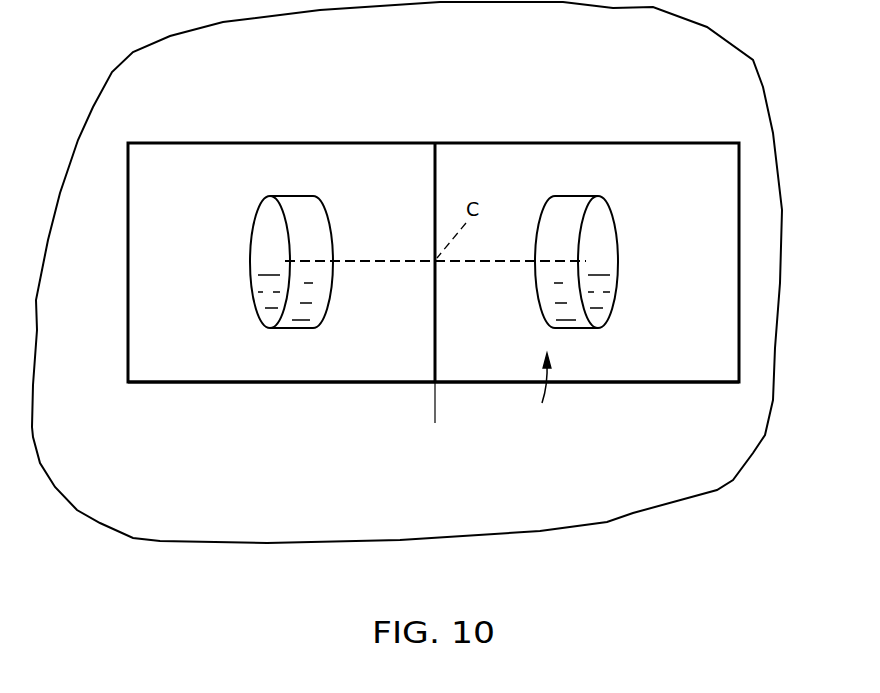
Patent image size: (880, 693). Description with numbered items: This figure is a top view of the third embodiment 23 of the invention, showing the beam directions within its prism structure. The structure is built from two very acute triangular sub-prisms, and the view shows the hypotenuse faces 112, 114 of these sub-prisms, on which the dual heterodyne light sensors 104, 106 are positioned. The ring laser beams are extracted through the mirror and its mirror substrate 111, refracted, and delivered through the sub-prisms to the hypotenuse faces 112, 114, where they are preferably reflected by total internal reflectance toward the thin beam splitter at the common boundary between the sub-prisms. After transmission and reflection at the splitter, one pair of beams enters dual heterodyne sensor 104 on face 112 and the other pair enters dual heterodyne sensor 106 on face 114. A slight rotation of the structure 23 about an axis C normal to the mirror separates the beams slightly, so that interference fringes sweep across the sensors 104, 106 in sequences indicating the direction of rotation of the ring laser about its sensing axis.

The dual heterodyne light sensor 104 is at (265, 225).
The dual heterodyne light sensor 106 is at (598, 225).
The mirror substrate 111 is at (725, 427).
The hypotenuse face 112 is at (320, 362).
The hypotenuse face 114 is at (617, 362).
The third embodiment 23 is at (536, 395).